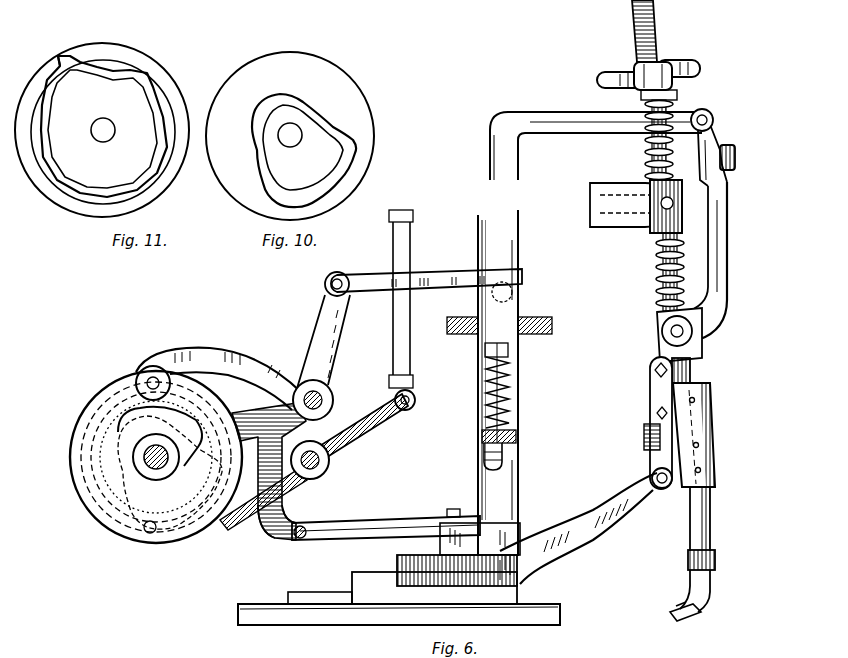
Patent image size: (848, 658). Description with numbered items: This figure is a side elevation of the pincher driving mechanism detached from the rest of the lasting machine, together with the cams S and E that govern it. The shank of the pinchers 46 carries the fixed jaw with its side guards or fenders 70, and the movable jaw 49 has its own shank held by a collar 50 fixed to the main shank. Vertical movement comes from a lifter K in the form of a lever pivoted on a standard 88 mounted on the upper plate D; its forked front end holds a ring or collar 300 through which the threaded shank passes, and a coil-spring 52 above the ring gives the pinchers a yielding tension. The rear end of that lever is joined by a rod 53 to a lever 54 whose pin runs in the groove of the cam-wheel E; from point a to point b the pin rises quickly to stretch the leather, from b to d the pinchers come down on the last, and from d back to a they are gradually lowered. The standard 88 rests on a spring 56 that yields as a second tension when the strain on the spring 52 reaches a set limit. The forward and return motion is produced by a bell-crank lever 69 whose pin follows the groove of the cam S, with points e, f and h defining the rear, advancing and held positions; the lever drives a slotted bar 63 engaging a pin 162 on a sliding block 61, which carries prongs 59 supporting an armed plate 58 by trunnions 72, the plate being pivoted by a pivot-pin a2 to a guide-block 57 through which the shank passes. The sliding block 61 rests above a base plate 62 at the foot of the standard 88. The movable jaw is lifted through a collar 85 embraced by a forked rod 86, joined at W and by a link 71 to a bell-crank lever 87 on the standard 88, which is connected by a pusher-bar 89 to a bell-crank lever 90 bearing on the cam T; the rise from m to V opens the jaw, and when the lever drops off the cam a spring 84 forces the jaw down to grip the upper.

In FIG. 11, the highest point of cam-groove a is at (60, 54).
In FIG. 6, the highest point of cam-groove a is at (205, 397).
In FIG. 11, the cam-groove point b is at (110, 70).
In FIG. 11, the cam-wheel E is at (152, 52).
In FIG. 6, the cam-wheel E is at (112, 378).
In FIG. 11, the cam-groove point d is at (158, 76).
In FIG. 6, the cam-groove point d is at (96, 398).
In FIG. 10, the cam S is at (340, 66).
In FIG. 6, the cam S is at (86, 477).
In FIG. 10, the lifter K is at (304, 139).
In FIG. 10, the cam-groove point h is at (252, 126).
In FIG. 10, the cam-groove point e is at (360, 137).
In FIG. 10, the cam-groove point f is at (268, 195).
In FIG. 6, the cam point V is at (117, 428).
In FIG. 6, the cam T is at (132, 472).
In FIG. 6, the cam point m is at (230, 511).
In FIG. 6, the bell-crank lever 69 is at (274, 530).
In FIG. 6, the slotted bar 63 is at (362, 522).
In FIG. 6, the pin 162 is at (454, 508).
In FIG. 6, the lever 54 is at (372, 430).
In FIG. 6, the bell-crank lever 90 is at (322, 336).
In FIG. 6, the rod 53 is at (394, 244).
In FIG. 6, the pusher-bar 89 is at (465, 272).
In FIG. 6, the ring or collar 300 is at (685, 190).
In FIG. 6, the standard 88 is at (522, 236).
In FIG. 6, the bell-crank lever 87 is at (540, 118).
In FIG. 6, the upper plate D is at (499, 317).
In FIG. 6, the spring 56 is at (512, 388).
In FIG. 6, the coil-spring 52 is at (680, 86).
In FIG. 6, the spring 84 is at (660, 256).
In FIG. 6, the link 71 is at (716, 140).
In FIG. 6, the joint W is at (741, 157).
In FIG. 6, the forked rod 86 is at (730, 241).
In FIG. 6, the collar 85 is at (658, 332).
In FIG. 6, the shank of the pinchers 46 is at (693, 370).
In FIG. 6, the guide-block 57 is at (716, 426).
In FIG. 6, the pivot-pin a2 is at (641, 436).
In FIG. 6, the armed plate 58 is at (655, 456).
In FIG. 6, the trunnions 72 is at (663, 488).
In FIG. 6, the prongs 59 is at (592, 532).
In FIG. 6, the collar 50 is at (716, 560).
In FIG. 6, the side guards or fenders 70 is at (684, 616).
In FIG. 6, the movable jaw 49 is at (690, 604).
In FIG. 6, the block 61 is at (397, 560).
In FIG. 6, the base plate 62 is at (562, 614).